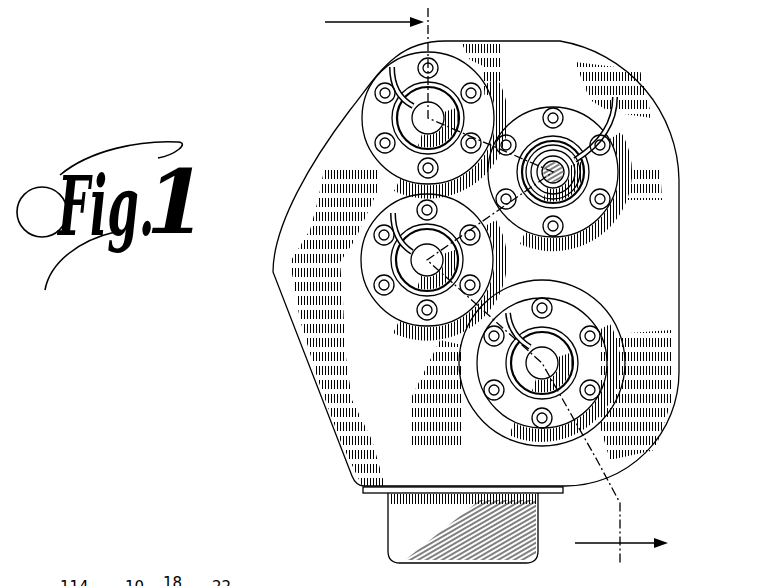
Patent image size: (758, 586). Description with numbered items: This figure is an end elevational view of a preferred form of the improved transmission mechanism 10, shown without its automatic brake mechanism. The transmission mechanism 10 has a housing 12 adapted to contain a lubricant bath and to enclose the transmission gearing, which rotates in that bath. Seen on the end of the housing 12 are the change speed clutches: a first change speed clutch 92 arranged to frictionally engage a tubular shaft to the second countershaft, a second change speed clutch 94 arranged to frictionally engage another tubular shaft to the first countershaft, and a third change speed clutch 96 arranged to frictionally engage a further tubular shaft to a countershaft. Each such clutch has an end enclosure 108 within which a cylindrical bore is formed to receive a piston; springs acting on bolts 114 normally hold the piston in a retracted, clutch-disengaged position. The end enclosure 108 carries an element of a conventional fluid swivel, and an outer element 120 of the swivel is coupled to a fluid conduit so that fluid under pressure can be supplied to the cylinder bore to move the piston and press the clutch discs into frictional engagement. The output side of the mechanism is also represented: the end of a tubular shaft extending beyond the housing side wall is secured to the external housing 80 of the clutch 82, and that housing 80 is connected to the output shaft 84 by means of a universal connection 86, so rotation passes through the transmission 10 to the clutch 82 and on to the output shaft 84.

The transmission mechanism 10 is at (308, 97).
The housing 12 is at (556, 41).
The external housing of clutch 80 is at (613, 146).
The clutch 82 is at (610, 162).
The output shaft 84 is at (575, 172).
The universal connection 86 is at (578, 176).
The first change speed clutch 92 is at (367, 273).
The second change speed clutch 94 is at (453, 56).
The third change speed clutch 96 is at (602, 350).
The end enclosure 108 is at (393, 125).
The bolts 114 is at (427, 68).
The outer element of swivel 120 is at (417, 122).